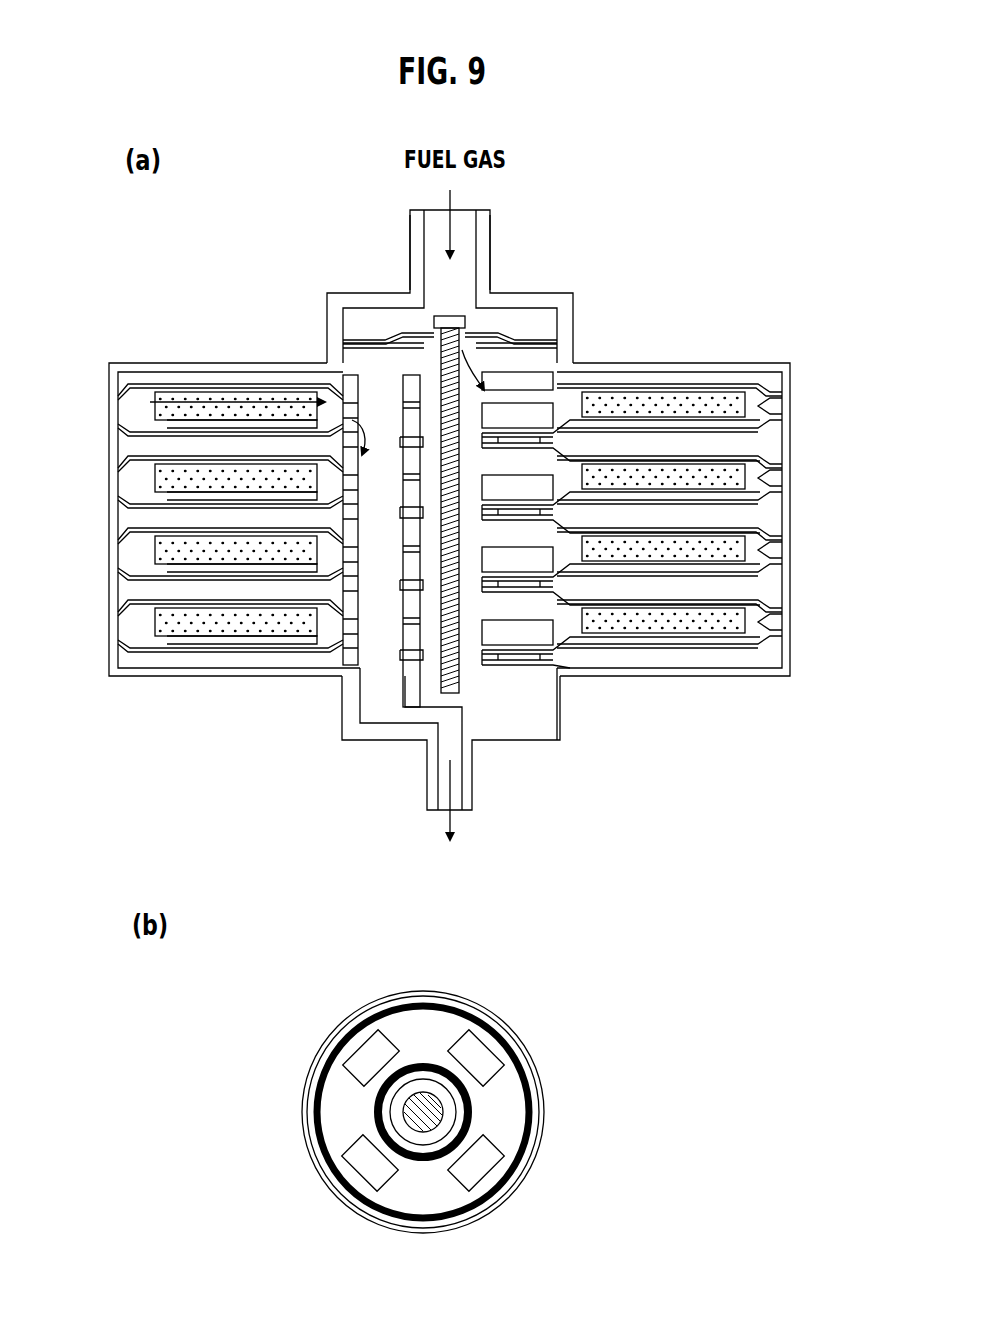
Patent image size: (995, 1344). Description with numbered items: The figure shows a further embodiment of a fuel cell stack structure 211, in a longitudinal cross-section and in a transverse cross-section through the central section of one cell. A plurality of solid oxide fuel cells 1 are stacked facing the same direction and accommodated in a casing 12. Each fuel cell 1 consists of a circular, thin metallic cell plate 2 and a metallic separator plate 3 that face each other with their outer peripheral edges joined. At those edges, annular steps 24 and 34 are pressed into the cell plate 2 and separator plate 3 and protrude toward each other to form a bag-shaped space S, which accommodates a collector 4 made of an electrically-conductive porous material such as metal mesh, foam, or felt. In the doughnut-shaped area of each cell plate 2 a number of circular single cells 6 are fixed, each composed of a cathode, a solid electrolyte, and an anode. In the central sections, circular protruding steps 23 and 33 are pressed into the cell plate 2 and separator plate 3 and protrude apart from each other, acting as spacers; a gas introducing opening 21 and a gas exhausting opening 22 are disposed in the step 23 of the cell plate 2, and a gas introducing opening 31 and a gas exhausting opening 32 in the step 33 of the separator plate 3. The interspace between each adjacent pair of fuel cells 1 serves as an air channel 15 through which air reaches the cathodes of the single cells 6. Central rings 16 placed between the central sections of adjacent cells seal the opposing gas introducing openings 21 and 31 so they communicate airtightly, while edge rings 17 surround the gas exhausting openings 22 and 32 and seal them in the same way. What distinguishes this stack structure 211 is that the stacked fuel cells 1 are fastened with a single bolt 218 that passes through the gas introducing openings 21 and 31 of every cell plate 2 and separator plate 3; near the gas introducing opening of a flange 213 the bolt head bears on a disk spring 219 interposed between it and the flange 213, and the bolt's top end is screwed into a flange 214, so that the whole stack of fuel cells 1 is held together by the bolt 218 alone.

The solid oxide fuel cell 1 is at (784, 374).
The cell plate 2 is at (766, 430).
The separator plate 3 is at (758, 380).
The collector 4 is at (600, 398).
The single cell 6 is at (715, 650).
The casing 12 is at (180, 677).
The air channel 15 is at (270, 600).
The central ring 16 is at (412, 700).
The edge ring 17 is at (557, 663).
The gas introducing opening 21 is at (468, 656).
The gas exhausting opening 22 is at (365, 657).
The circular protruding step 23 is at (345, 661).
The annular step 24 is at (130, 418).
The gas introducing opening 31 is at (470, 370).
The gas exhausting opening 32 is at (372, 372).
The circular protruding step 33 is at (343, 378).
The annular step 34 is at (140, 398).
The stack structure 211 is at (607, 210).
The flange 213 is at (491, 222).
The flange 214 is at (541, 723).
The bolt 218 is at (448, 316).
The disk spring 219 is at (526, 333).
The space S is at (766, 506).